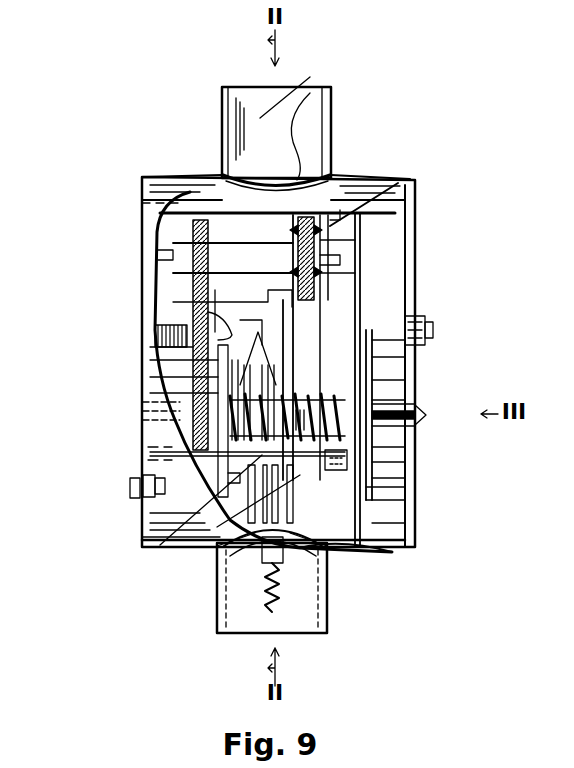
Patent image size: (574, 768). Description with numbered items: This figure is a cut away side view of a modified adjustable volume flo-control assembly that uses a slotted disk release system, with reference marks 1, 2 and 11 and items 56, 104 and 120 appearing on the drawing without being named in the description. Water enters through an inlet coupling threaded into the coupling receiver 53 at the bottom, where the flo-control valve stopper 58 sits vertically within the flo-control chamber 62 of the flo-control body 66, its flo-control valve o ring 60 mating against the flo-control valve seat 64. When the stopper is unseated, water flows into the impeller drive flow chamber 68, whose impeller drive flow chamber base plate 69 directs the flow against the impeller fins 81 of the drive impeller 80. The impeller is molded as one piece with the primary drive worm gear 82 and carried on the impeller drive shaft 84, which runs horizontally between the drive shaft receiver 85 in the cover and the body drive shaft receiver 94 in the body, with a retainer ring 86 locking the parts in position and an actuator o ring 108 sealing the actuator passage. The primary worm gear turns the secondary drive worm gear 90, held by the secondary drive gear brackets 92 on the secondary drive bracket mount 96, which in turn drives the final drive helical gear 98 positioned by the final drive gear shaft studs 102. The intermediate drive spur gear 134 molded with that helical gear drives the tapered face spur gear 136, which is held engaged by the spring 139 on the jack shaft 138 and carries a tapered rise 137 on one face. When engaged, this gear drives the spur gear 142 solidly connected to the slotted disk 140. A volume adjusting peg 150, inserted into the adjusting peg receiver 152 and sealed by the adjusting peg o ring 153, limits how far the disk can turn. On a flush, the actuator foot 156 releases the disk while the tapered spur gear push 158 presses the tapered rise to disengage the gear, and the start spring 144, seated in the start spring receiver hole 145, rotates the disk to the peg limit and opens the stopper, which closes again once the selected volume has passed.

The valve body 1 is at (405, 245).
The housing 2 is at (415, 209).
The base plate 11 is at (172, 556).
The coupling receiver 53 is at (240, 620).
The spring 56 is at (283, 582).
The flo-control valve stopper 58 is at (385, 551).
The flo-control valve o ring 60 is at (217, 580).
The flo-control chamber 62 is at (217, 553).
The flo-control valve seat 64 is at (327, 553).
The flo-control body 66 is at (142, 537).
The impeller drive flow chamber 68 is at (395, 524).
The impeller drive flow chamber base plate 69 is at (415, 356).
The drive impeller 80 is at (395, 497).
The impeller fin 81 is at (410, 463).
The primary drive worm gear 82 is at (375, 386).
The impeller drive shaft 84 is at (426, 415).
The drive shaft receiver 85 is at (420, 407).
The retainer ring 86 is at (420, 423).
The secondary drive worm gear 90 is at (357, 288).
The secondary drive gear bracket 92 is at (150, 460).
The body drive shaft receiver 94 is at (143, 411).
The secondary drive bracket mount 96 is at (339, 476).
The final drive helical gear 98 is at (357, 229).
The final drive gear shaft stud 102 is at (355, 263).
The nut 104 is at (418, 318).
The actuator o ring 108 is at (433, 330).
The canister 120 is at (243, 187).
The intermediate drive spur gear 134 is at (195, 290).
The tapered face spur gear 136 is at (200, 305).
The tapered rise 137 is at (232, 304).
The jack shaft 138 is at (155, 335).
The spring 139 is at (150, 347).
The slotted disk 140 is at (150, 360).
The spur gear 142 is at (150, 377).
The start spring 144 is at (150, 393).
The start spring receiver hole 145 is at (281, 356).
The volume adjusting peg 150 is at (130, 488).
The adjusting peg receiver 152 is at (150, 455).
The adjusting peg o ring 153 is at (150, 497).
The actuator foot 156 is at (180, 505).
The tapered spur gear push 158 is at (240, 318).